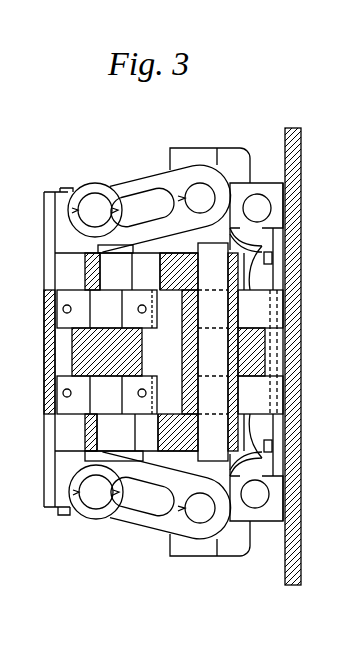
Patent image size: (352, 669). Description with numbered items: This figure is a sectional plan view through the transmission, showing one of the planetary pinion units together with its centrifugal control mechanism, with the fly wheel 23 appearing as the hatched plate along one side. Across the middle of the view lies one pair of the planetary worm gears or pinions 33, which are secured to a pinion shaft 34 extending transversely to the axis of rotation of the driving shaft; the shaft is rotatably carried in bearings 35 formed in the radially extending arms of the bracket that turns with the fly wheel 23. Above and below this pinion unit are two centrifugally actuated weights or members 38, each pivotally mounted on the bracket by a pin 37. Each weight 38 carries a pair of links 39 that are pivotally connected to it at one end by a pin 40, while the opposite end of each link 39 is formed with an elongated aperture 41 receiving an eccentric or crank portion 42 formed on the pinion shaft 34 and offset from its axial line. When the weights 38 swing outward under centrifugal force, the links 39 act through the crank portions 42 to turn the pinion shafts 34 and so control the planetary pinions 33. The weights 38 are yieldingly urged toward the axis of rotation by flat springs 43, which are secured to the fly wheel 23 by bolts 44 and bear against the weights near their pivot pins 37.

The fly wheel 23 is at (300, 285).
The planetary worm gears or pinions 33 is at (78, 365).
The pinion shafts 34 is at (80, 402).
The bearings 35 is at (63, 293).
The pins 37 is at (250, 200).
The centrifugally actuated weights or members 38 is at (228, 153).
The links 39 is at (150, 177).
The pin 40 is at (194, 190).
The elongated apertures 41 is at (132, 188).
The eccentric or crank portions 42 is at (95, 208).
The flat springs 43 is at (262, 232).
The bolts 44 is at (273, 257).